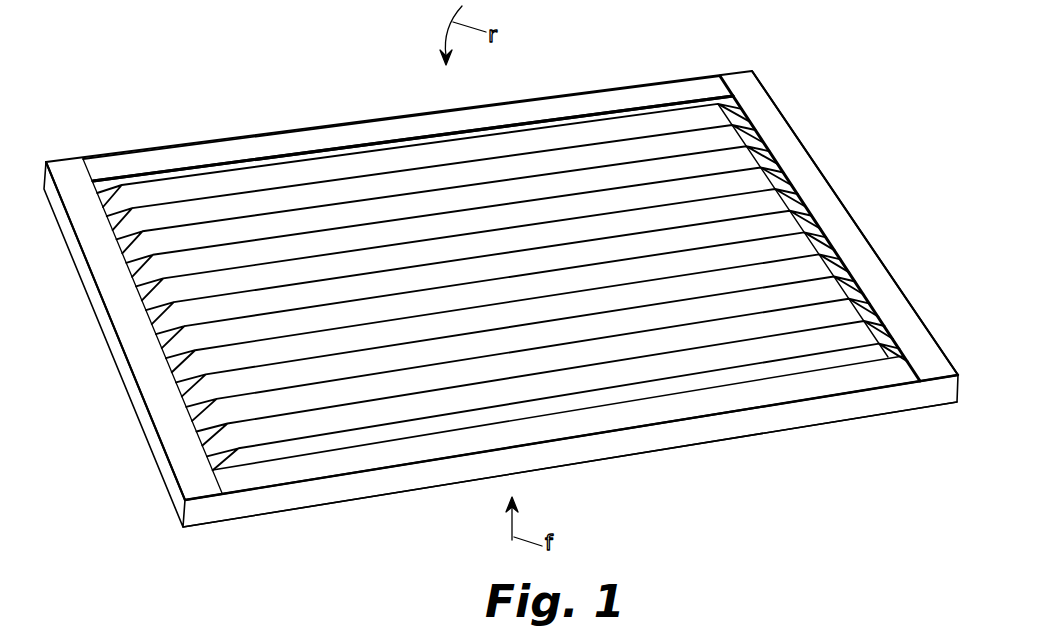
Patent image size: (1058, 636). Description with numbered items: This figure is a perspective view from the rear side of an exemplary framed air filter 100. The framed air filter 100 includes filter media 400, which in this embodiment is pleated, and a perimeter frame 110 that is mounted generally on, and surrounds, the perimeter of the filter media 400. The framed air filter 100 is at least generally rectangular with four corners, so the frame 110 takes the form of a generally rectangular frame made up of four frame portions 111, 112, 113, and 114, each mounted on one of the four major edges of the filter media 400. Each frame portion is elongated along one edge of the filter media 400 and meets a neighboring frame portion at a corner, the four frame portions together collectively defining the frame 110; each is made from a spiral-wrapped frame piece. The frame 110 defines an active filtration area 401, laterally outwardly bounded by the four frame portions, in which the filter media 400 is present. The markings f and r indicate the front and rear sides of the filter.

The framed air filter 100 is at (751, 44).
The frame 110 is at (232, 508).
The frame portion 111 is at (208, 150).
The frame portion 112 is at (823, 190).
The frame portion 113 is at (603, 447).
The frame portion 114 is at (155, 453).
The filter media 400 is at (290, 402).
The active filtration area 401 is at (372, 156).